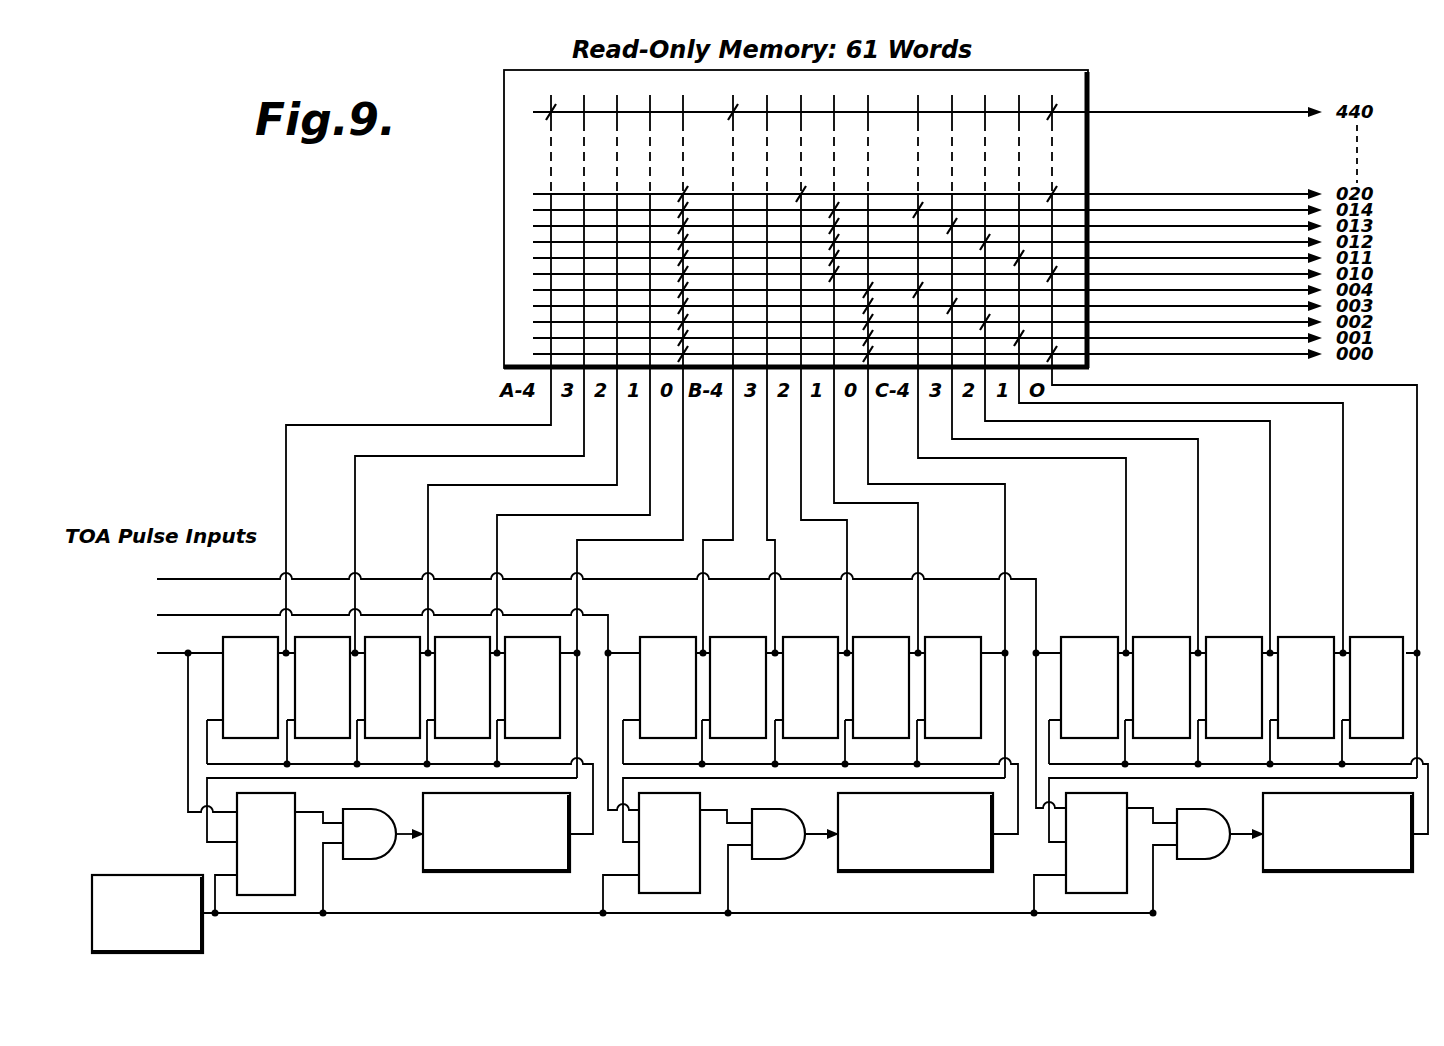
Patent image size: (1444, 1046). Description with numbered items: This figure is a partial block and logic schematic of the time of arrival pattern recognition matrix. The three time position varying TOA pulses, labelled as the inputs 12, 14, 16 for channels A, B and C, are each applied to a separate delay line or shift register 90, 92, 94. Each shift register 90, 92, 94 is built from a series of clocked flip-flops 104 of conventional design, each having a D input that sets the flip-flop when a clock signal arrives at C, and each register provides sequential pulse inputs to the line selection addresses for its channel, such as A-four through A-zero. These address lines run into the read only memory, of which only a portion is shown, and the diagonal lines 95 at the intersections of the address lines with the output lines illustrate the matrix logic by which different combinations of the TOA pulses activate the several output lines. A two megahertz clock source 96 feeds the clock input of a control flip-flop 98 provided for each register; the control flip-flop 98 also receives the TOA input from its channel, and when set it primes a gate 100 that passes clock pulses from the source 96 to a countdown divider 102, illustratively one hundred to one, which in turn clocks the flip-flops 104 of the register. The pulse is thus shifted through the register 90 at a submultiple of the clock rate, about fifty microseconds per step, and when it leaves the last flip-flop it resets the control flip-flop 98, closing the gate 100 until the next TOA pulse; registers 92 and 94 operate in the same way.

The TOA pulse input A 12 is at (140, 646).
The TOA pulse input B 14 is at (140, 608).
The TOA pulse input C 16 is at (140, 572).
The shift register 90 is at (404, 610).
The shift register 92 is at (824, 610).
The shift register 94 is at (1244, 604).
The diagonal lines 95 is at (688, 211).
The 2 MHz clock source 96 is at (113, 875).
The control flip-flop 98 is at (280, 805).
The gate 100 is at (380, 850).
The countdown divider 102 is at (526, 873).
The D flip-flop 104 is at (270, 699).